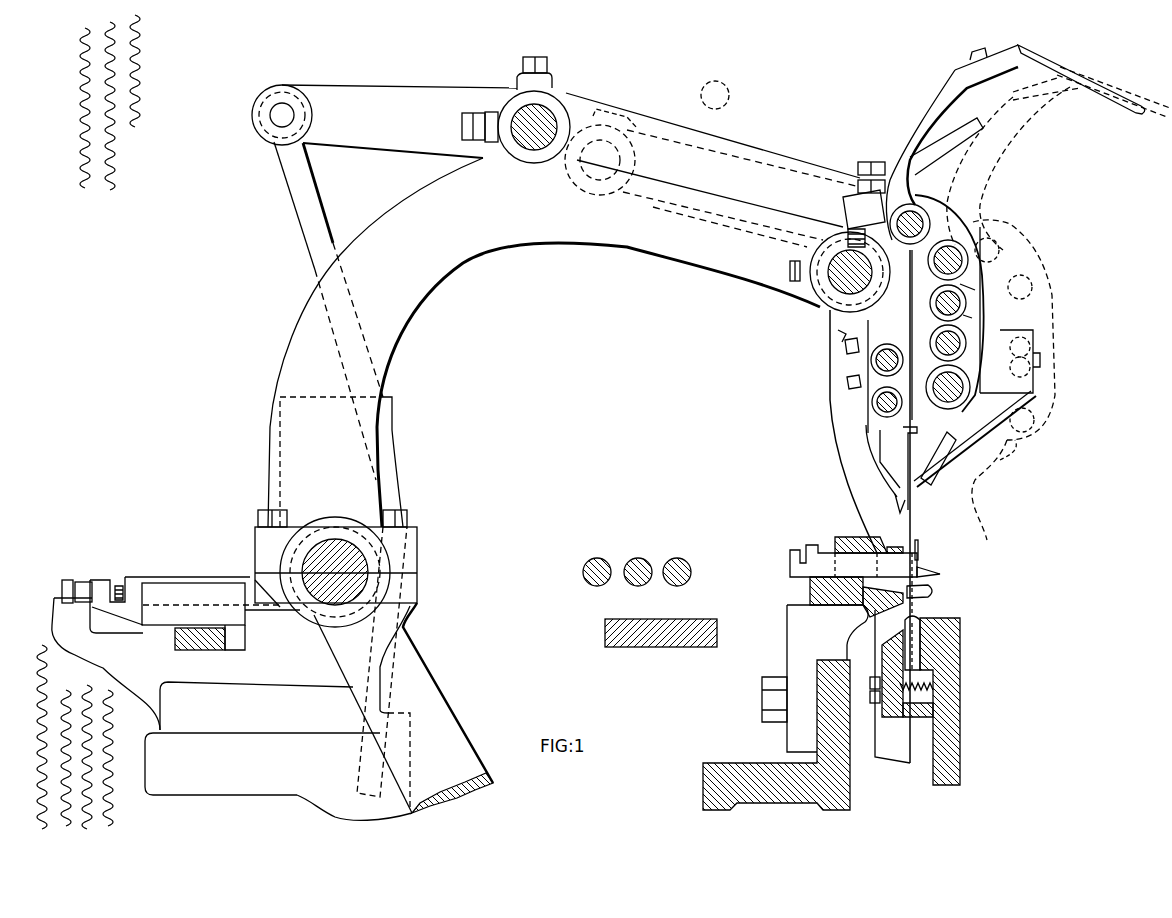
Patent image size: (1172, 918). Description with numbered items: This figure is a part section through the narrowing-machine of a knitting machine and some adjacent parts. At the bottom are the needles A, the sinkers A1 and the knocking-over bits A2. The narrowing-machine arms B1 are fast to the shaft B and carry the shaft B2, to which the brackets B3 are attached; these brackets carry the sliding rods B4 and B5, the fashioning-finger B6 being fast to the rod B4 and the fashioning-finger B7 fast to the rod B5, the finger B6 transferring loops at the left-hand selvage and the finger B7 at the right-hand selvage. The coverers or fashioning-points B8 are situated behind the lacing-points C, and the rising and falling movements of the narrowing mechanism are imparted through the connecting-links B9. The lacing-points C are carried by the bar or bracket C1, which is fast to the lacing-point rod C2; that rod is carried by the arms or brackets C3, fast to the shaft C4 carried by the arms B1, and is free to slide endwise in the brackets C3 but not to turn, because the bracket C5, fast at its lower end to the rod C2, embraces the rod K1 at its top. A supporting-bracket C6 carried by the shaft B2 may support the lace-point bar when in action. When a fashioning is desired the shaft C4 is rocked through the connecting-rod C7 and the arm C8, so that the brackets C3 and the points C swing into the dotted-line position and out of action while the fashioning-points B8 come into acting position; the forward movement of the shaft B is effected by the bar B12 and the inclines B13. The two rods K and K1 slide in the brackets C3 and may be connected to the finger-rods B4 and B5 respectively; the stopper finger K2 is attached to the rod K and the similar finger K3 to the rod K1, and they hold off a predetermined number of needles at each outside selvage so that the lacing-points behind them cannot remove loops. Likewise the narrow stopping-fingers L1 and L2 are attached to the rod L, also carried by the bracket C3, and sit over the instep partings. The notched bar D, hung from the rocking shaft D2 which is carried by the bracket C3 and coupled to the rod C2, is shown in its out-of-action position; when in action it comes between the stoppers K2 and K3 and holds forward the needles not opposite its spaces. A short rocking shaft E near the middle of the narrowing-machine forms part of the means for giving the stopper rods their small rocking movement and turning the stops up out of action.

The needles A is at (918, 549).
The sinkers A1 is at (865, 577).
The knocking-over bits A2 is at (936, 592).
The shaft B is at (374, 605).
The narrowing-machine arms B1 is at (544, 342).
The shaft B2 is at (840, 237).
The brackets B3 is at (870, 506).
The sliding rod B4 is at (874, 396).
The sliding rod B5 is at (874, 357).
The fashioning-finger B6 is at (868, 453).
The fashioning-finger B7 is at (870, 392).
The coverers or fashioning-points B8 is at (896, 500).
The connecting-links B9 is at (877, 461).
The bar B12 is at (193, 616).
The inclines B13 is at (217, 577).
The lacing-points C is at (912, 502).
The bar or bracket C1 is at (950, 448).
The lacing-point rod C2 is at (948, 387).
The arms or brackets C3 is at (743, 180).
The shaft C4 is at (549, 143).
The bracket C5 is at (964, 307).
The supporting-bracket C6 is at (840, 335).
The connecting-rod C7 is at (328, 311).
The arm C8 is at (402, 107).
The bar D is at (1111, 100).
The rocking shaft or rod D2 is at (910, 224).
The short rocking shaft E is at (715, 95).
The rod K is at (948, 343).
The rod K1 is at (948, 303).
The stopper finger or bracket K2 is at (936, 470).
The stopper finger K3 is at (978, 320).
The rod L is at (948, 260).
The narrow stopping-finger L1 is at (975, 290).
The narrow stopping-finger L2 is at (990, 296).